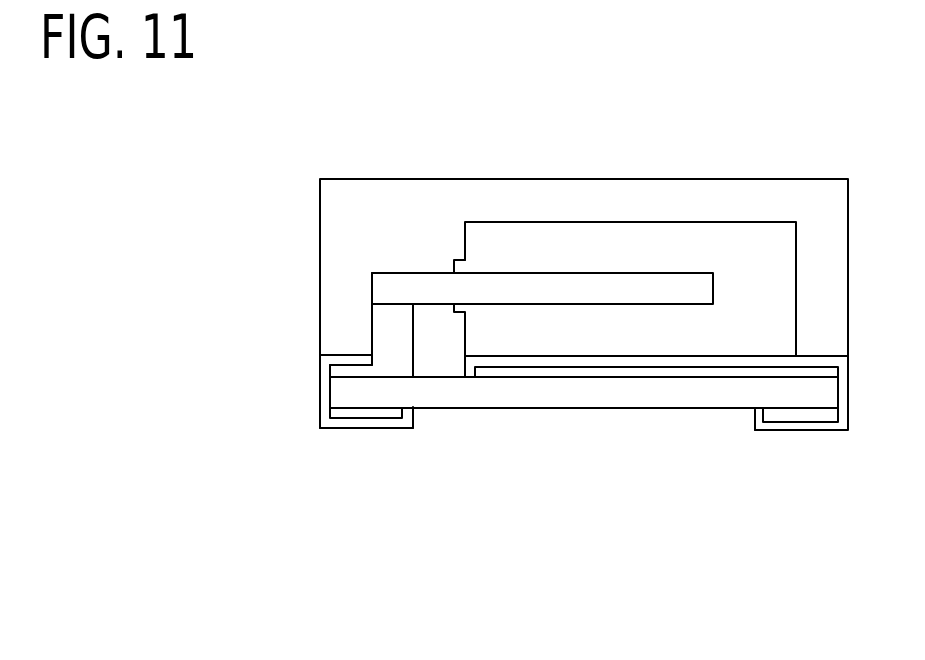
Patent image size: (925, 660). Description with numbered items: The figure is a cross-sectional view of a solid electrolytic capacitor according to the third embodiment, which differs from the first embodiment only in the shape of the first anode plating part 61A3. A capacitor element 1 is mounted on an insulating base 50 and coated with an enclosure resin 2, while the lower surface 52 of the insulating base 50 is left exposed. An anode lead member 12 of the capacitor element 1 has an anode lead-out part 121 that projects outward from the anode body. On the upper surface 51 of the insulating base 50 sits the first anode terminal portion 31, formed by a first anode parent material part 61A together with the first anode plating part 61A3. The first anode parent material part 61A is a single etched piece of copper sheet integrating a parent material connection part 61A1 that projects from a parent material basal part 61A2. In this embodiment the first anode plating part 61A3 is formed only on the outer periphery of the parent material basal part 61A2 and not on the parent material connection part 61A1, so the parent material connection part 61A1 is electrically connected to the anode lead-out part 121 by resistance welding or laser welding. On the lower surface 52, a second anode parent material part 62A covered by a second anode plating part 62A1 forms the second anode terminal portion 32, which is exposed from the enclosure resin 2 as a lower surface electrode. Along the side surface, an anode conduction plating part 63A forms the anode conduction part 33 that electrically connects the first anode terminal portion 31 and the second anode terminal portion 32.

The capacitor element 1 is at (673, 237).
The enclosure resin 2 is at (822, 192).
The anode lead member 12 is at (542, 237).
The anode lead-out part 121 is at (393, 282).
The first anode terminal portion 31 is at (244, 295).
The first anode parent material part 61A is at (274, 295).
The parent material connection part 61A1 is at (387, 330).
The parent material basal part 61A2 is at (362, 370).
The first anode plating part 61A3 is at (344, 360).
The anode conduction plating part 63A is at (484, 384).
The anode conduction part 33 is at (325, 392).
The second anode terminal portion 32 is at (358, 462).
The second anode parent material part 62A is at (377, 413).
The second anode plating part 62A1 is at (345, 422).
The insulating base 50 is at (620, 400).
The upper surface 51 is at (430, 377).
The lower surface 52 is at (503, 410).